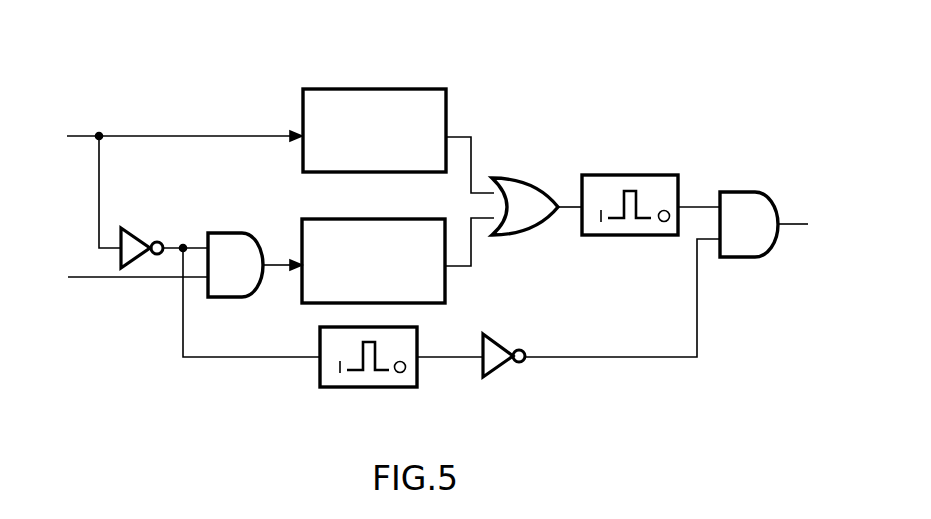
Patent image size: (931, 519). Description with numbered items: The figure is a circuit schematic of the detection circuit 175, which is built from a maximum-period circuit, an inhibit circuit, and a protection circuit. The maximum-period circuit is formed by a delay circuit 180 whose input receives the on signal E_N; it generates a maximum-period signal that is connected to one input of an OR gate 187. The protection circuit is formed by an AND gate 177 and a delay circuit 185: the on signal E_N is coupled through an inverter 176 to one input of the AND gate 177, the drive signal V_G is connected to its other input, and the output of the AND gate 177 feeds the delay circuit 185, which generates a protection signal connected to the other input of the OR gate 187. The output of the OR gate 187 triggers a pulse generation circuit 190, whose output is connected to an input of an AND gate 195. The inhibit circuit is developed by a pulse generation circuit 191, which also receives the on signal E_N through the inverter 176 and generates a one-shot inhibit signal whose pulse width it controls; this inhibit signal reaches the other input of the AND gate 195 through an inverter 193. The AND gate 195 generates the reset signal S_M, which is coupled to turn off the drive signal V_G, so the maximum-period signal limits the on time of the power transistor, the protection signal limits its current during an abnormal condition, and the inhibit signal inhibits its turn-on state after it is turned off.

The detection circuit 175 is at (855, 43).
The inverter 176 is at (137, 233).
The AND gate 177 is at (222, 232).
The delay circuit 180 is at (357, 89).
The delay circuit 185 is at (350, 219).
The OR gate 187 is at (508, 177).
The pulse generation circuit 190 is at (606, 175).
The pulse generation circuit 191 is at (418, 362).
The inverter 193 is at (504, 366).
The AND gate 195 is at (732, 192).